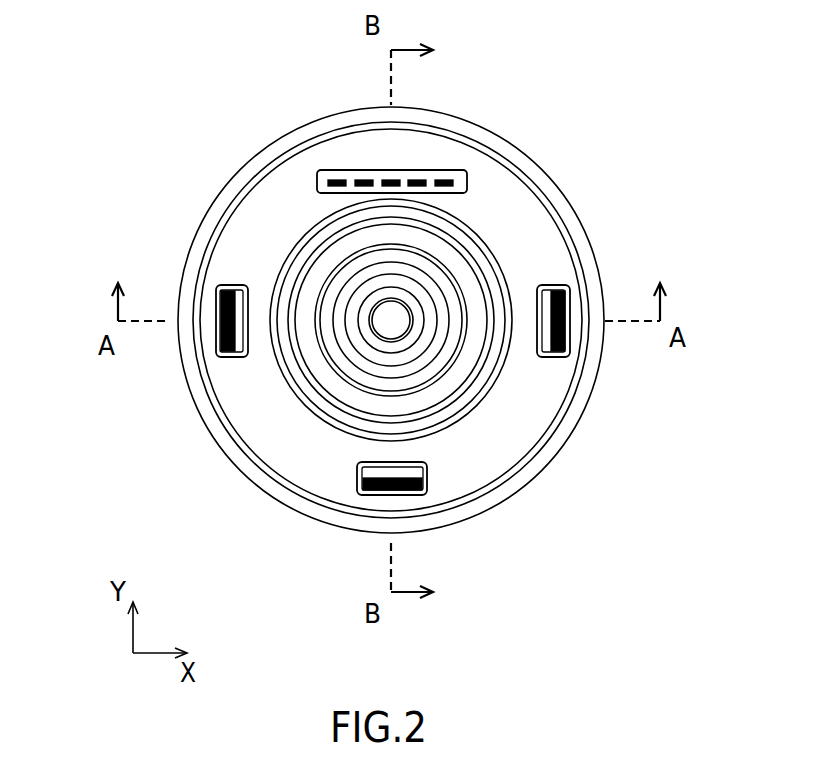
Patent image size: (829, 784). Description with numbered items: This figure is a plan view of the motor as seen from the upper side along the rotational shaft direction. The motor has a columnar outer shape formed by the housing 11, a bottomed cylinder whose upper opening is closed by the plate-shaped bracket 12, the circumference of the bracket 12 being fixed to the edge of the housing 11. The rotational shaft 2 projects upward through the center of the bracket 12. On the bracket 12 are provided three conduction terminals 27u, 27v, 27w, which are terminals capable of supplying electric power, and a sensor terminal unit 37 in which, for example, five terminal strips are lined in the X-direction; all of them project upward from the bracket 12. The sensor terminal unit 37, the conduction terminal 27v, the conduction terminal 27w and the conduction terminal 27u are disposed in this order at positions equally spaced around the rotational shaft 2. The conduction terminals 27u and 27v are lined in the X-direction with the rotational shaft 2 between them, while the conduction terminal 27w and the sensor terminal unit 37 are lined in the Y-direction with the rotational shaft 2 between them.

The rotational shaft 2 is at (388, 308).
The housing 11 is at (545, 472).
The bracket 12 is at (522, 228).
The sensor terminal unit 37 is at (413, 175).
The conduction terminal 27u is at (222, 307).
The conduction terminal 27v is at (563, 342).
The conduction terminal 27w is at (387, 487).